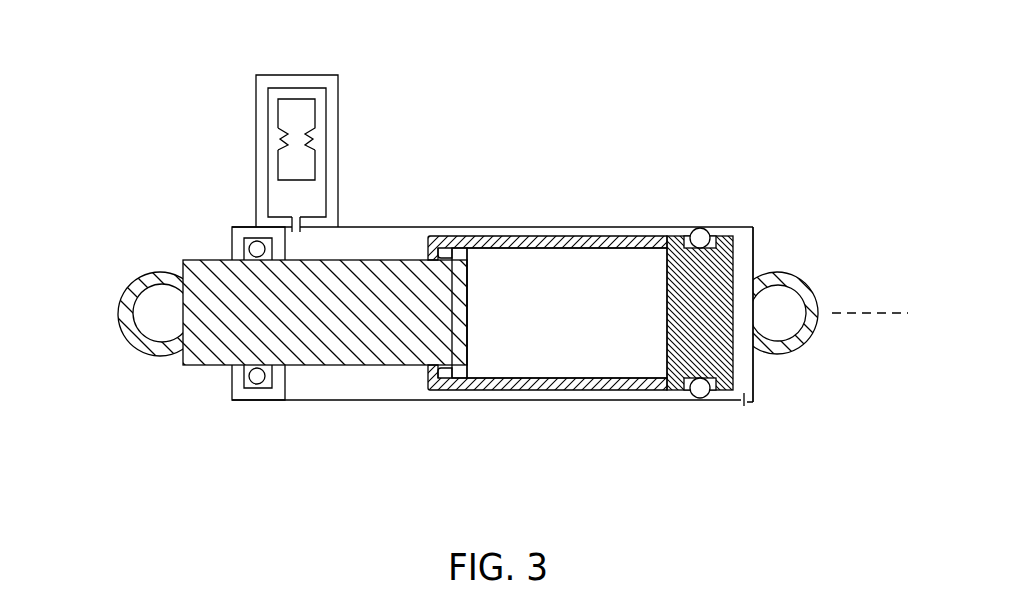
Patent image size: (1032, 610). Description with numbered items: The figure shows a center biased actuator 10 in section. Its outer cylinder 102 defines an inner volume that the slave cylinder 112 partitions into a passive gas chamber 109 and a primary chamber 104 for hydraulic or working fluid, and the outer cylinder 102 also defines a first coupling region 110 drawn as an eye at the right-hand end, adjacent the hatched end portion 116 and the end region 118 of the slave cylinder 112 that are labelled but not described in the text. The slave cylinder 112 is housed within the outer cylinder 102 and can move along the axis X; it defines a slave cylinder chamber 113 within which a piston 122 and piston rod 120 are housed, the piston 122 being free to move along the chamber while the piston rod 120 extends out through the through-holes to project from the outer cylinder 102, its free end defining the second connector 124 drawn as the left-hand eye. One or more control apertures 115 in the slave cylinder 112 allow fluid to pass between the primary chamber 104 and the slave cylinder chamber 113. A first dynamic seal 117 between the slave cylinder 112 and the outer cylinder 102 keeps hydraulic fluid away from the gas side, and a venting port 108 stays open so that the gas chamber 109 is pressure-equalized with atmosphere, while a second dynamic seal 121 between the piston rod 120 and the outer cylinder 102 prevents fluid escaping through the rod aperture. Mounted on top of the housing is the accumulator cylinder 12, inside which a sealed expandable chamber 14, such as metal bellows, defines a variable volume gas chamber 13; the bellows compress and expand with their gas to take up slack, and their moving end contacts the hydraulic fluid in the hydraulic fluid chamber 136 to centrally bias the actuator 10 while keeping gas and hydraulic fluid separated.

The actuator 10 is at (793, 180).
The accumulator cylinder 12 is at (282, 120).
The variable volume gas chamber 13 is at (293, 105).
The sealed expandable chamber 14 is at (278, 160).
The hydraulic fluid chamber 136 is at (285, 198).
The outer cylinder 102 is at (492, 271).
The primary chamber 104 is at (390, 245).
The venting port 108 is at (745, 405).
The passive gas chamber 109 is at (748, 366).
The first coupling region 110 is at (793, 276).
The slave cylinder 112 is at (507, 322).
The slave cylinder chamber 113 is at (645, 323).
The control aperture 115 is at (562, 236).
The end cap 116 is at (643, 236).
The first dynamic seal 117 is at (703, 228).
The cylinder end 118 is at (427, 382).
The piston rod 120 is at (290, 353).
The second dynamic seal 121 is at (248, 245).
The piston 122 is at (467, 320).
The second connector 124 is at (118, 310).